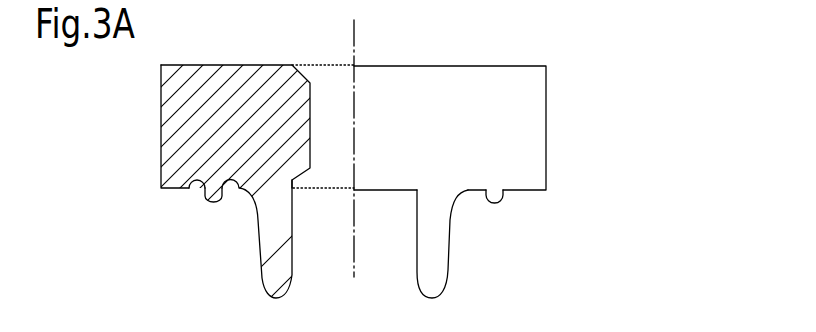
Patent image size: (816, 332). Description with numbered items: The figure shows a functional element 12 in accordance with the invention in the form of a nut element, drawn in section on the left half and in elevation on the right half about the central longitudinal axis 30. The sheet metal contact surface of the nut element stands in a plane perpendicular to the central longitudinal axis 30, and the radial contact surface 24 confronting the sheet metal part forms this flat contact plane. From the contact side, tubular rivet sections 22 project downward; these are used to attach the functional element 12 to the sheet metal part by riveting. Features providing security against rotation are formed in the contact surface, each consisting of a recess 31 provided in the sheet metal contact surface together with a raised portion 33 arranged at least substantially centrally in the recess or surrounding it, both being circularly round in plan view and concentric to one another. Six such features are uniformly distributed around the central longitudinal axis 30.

The functional element 12 is at (598, 115).
The tubular rivet section 22 is at (441, 248).
The contact surface 24 is at (168, 189).
The central longitudinal axis 30 is at (355, 42).
The recess 31 is at (198, 190).
The raised portion 33 is at (216, 196).